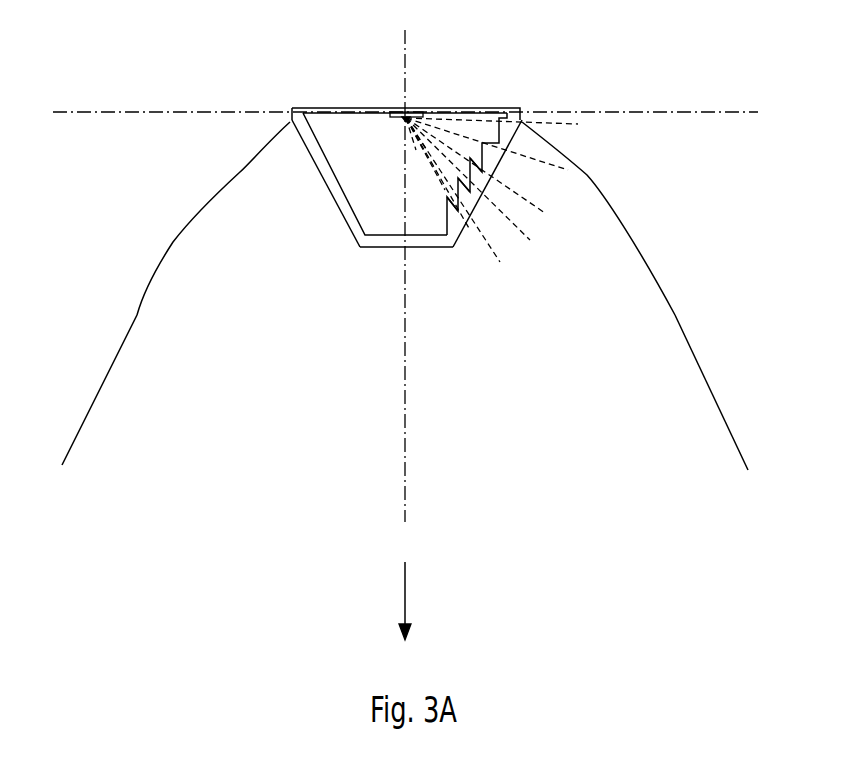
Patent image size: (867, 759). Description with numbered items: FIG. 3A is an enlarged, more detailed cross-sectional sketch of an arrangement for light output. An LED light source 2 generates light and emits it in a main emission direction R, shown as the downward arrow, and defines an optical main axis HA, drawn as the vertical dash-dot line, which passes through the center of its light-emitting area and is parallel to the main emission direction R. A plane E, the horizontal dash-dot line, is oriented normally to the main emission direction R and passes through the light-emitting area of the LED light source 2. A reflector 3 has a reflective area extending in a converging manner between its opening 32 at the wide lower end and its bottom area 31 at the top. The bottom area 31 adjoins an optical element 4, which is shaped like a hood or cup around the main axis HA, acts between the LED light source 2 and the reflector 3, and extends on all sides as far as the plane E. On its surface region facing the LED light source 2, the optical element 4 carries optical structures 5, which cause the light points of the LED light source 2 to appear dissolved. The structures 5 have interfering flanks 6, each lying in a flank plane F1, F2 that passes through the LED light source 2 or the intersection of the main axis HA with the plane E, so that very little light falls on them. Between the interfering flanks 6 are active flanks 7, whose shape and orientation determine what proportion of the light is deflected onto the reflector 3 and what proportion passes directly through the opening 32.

The LED light source 2 is at (393, 113).
The reflector 3 is at (150, 282).
The bottom area 31 is at (288, 123).
The opening 32 is at (62, 465).
The optical element 4 is at (372, 243).
The optical structures 5 is at (480, 132).
The flank areas 6 is at (478, 190).
The active flanks 7 is at (467, 153).
The plane E is at (683, 113).
The optical main axis HA is at (405, 333).
The main emission direction R is at (411, 601).
The flank plane F1 is at (477, 257).
The flank plane F2 is at (507, 238).